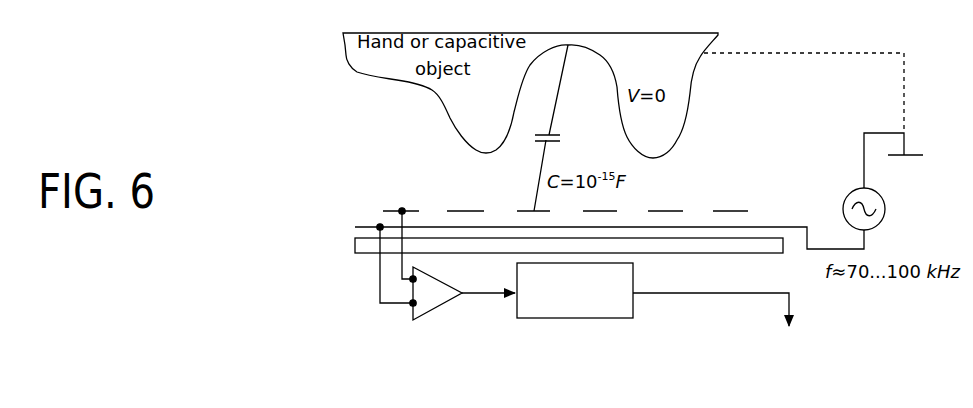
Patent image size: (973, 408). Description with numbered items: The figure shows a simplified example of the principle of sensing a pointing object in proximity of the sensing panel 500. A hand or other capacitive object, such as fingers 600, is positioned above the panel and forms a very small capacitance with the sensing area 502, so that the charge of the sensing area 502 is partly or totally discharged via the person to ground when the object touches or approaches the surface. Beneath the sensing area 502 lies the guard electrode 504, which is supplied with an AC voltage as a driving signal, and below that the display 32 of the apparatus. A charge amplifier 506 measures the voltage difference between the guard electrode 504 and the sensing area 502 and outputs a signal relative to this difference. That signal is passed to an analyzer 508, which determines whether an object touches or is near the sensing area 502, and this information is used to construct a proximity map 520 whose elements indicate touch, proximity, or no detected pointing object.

The fingers 600 is at (440, 122).
The sensing panel 500 is at (422, 175).
The sensing area 502 is at (378, 210).
The guard electrode 504 is at (351, 227).
The display 32 is at (351, 246).
The charge amplifier 506 is at (438, 310).
The analyzer 508 is at (567, 318).
The proximity map 520 is at (738, 341).